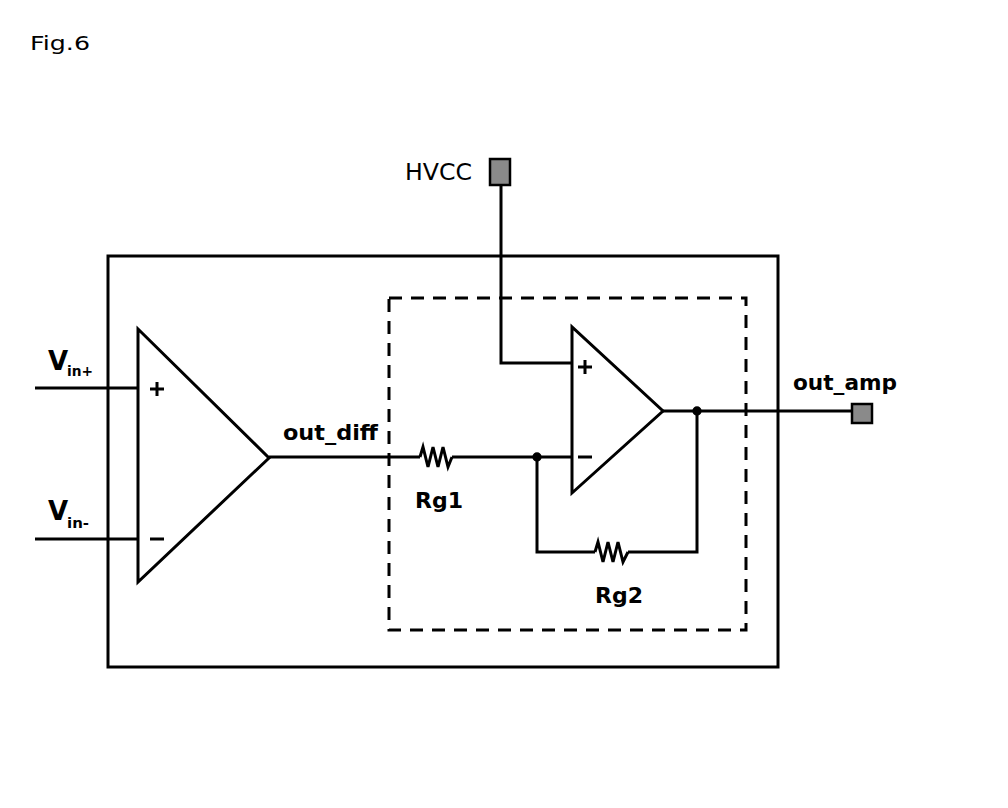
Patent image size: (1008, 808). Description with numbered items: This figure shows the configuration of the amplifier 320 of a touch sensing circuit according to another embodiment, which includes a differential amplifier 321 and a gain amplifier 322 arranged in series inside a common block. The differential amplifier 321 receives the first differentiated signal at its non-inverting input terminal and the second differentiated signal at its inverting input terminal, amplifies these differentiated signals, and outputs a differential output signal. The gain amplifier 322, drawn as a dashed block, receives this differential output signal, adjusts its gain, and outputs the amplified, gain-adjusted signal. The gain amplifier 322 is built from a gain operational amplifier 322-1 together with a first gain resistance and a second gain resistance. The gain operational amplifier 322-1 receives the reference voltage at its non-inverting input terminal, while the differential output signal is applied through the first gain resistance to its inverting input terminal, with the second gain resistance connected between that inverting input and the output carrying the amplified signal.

The amplifier 320 is at (653, 256).
The differential amplifier 321 is at (210, 517).
The gain amplifier 322 is at (587, 629).
The gain operational amplifier 322-1 is at (617, 367).